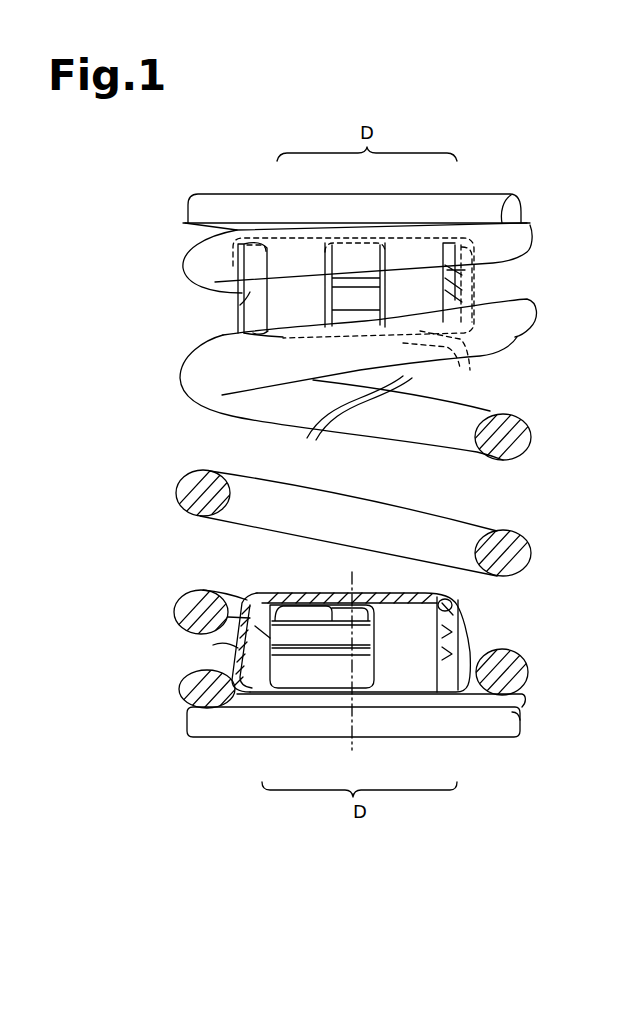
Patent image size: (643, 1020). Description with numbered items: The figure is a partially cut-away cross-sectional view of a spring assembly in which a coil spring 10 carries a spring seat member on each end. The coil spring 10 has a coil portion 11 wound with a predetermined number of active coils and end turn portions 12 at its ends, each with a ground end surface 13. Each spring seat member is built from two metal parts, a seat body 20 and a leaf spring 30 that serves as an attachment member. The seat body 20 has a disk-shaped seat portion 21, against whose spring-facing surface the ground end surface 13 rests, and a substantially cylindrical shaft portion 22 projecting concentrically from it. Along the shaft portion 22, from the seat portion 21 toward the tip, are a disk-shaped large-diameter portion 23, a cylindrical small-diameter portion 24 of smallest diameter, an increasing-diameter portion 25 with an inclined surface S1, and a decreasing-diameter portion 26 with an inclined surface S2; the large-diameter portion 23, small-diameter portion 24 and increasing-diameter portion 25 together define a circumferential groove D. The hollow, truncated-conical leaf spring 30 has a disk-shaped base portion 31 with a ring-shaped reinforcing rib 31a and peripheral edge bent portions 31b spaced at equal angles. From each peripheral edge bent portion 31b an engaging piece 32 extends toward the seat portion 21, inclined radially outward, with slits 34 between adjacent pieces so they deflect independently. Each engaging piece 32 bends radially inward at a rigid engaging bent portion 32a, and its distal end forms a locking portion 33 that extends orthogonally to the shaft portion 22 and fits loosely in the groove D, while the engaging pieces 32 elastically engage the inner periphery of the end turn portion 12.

The coil spring 10 is at (535, 408).
The coil portion 11 is at (477, 522).
The end turn portion 12 is at (523, 233).
The ground end surface 13 is at (512, 197).
The seat body 20 is at (348, 467).
The seat portion 21 is at (252, 203).
The shaft portion 22 is at (470, 280).
The large-diameter portion 23 is at (313, 240).
The small-diameter portion 24 is at (363, 256).
The increasing-diameter portion 25 is at (362, 260).
The decreasing-diameter portion 26 is at (470, 287).
The leaf spring 30 is at (316, 495).
The base portion 31 is at (440, 345).
The reinforcing rib 31a is at (462, 347).
The peripheral edge bent portion 31b is at (243, 333).
The engaging piece 32 is at (240, 305).
The engaging bent portion 32a is at (232, 242).
The locking portion 33 is at (233, 262).
The slit 34 is at (357, 471).